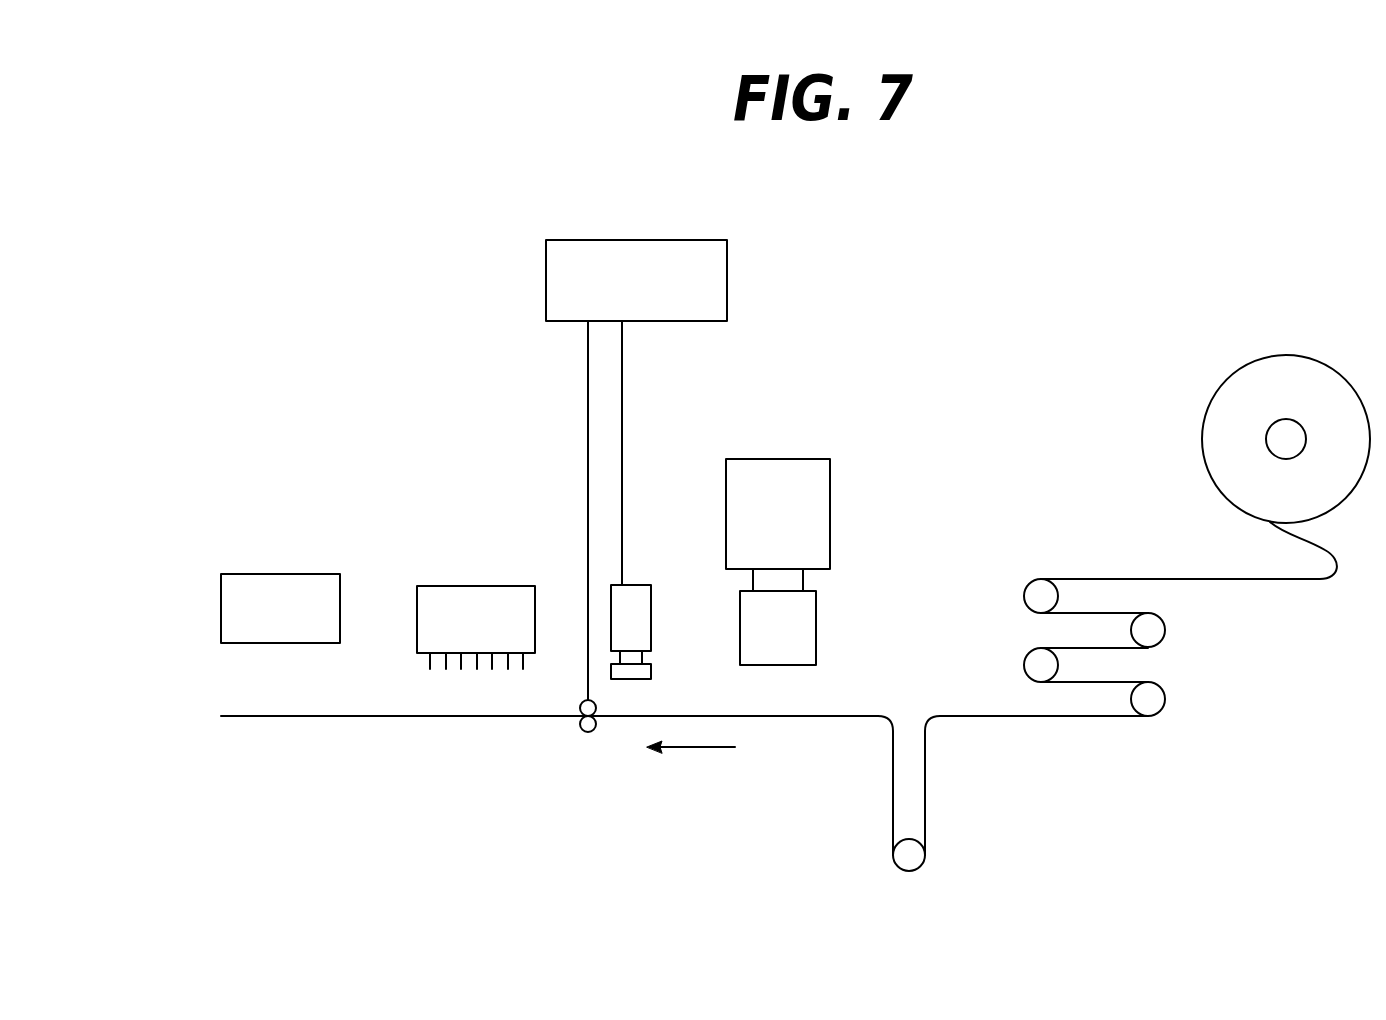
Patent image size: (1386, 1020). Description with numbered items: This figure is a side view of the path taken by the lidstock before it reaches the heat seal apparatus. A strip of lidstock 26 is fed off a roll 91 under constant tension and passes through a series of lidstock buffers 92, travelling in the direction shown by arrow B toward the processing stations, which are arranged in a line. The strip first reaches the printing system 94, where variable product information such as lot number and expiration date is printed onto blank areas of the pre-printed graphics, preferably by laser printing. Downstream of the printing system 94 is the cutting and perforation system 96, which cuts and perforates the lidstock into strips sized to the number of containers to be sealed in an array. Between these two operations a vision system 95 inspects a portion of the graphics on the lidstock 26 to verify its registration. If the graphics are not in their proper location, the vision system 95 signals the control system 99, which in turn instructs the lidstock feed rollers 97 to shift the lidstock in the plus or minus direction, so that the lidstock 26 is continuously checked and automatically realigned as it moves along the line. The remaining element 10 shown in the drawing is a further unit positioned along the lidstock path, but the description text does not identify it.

The image forming unit / inkjet head 10 is at (275, 574).
The lidstock 26 is at (1055, 718).
The roll 91 is at (1315, 360).
The lidstock buffers 92 is at (1165, 702).
The printing system 94 is at (775, 467).
The vision system 95 is at (633, 592).
The cutting and perforation system 96 is at (473, 586).
The lidstock feed rollers 97 is at (582, 731).
The control system 99 is at (633, 248).
The arrow B is at (693, 751).